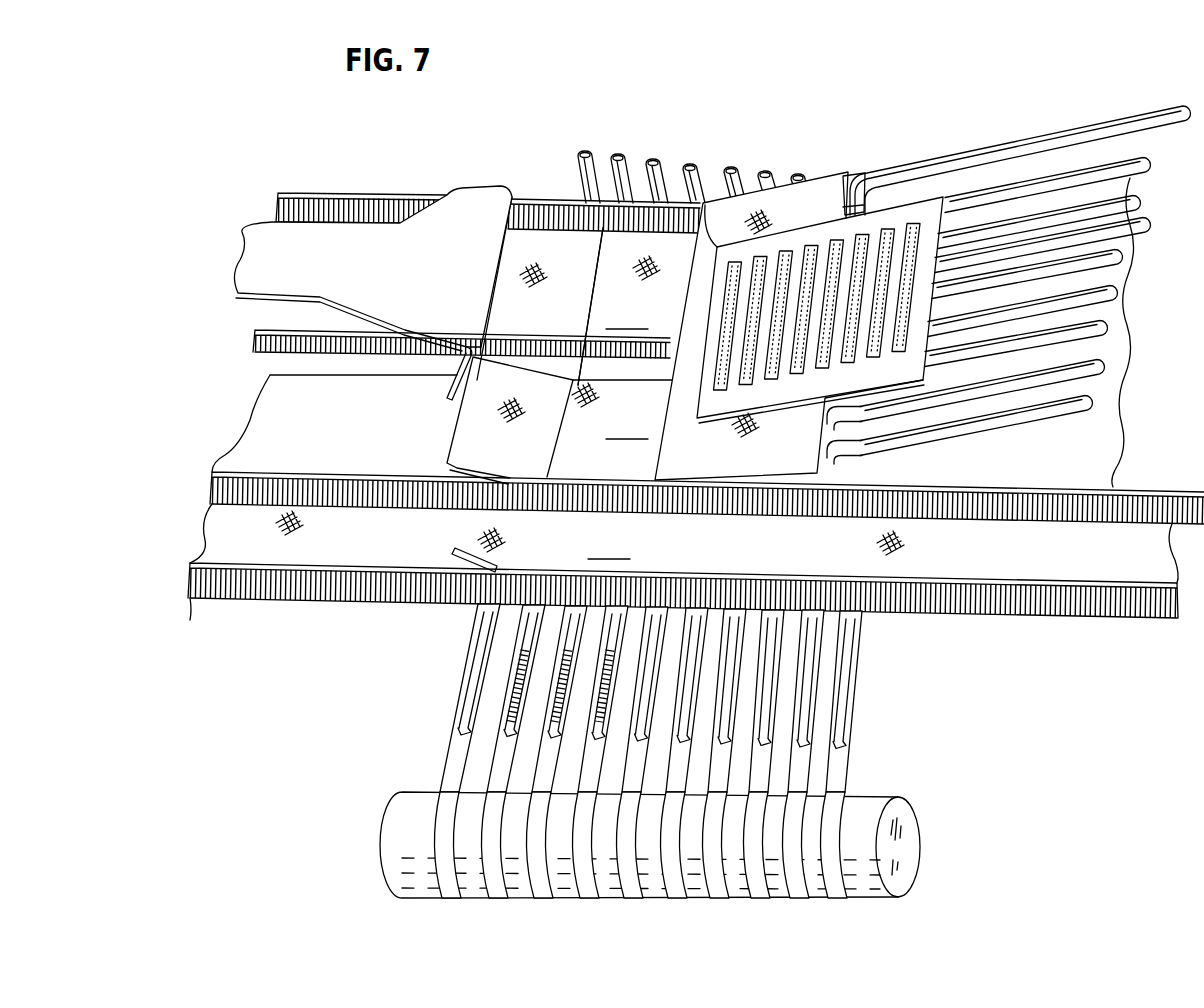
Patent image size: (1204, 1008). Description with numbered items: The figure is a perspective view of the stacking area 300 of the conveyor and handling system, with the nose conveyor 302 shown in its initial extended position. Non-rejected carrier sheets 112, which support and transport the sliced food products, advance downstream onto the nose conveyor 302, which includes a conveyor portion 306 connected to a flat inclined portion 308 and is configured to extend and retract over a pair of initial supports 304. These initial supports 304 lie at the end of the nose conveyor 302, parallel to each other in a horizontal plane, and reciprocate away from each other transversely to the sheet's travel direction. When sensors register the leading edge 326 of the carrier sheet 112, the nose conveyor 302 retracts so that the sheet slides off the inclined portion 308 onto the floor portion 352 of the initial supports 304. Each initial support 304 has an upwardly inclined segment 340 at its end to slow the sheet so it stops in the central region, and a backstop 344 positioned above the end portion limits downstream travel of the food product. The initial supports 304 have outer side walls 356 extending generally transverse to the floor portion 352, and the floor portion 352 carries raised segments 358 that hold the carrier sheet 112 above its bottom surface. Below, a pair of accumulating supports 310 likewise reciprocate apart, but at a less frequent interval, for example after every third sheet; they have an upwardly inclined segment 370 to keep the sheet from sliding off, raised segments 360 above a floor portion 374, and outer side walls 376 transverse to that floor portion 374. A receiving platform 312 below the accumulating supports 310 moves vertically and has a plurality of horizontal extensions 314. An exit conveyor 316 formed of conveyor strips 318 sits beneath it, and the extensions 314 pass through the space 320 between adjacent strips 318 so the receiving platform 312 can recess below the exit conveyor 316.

The stacking area 300 is at (654, 84).
The backstop 344 is at (458, 228).
The upwardly inclined segment 340 is at (525, 243).
The raised segments 358 is at (637, 263).
The initial supports 304 is at (632, 247).
The leading edge 326 is at (747, 200).
The carrier sheet 112 is at (800, 237).
The flat inclined portion 308 is at (833, 187).
The nose conveyor 302 is at (884, 165).
The conveyor portion 306 is at (980, 151).
The floor portion 352 is at (622, 333).
The floor portion 374 is at (684, 543).
The outer side walls 356 is at (317, 490).
The upwardly inclined segment 370 is at (490, 540).
The outer side walls 376 is at (238, 603).
The accumulating supports 310 is at (1080, 565).
The raised segments 360 is at (905, 553).
The receiving platform 312 is at (474, 689).
The conveyor strips 318 is at (462, 752).
The space 320 is at (472, 776).
The extensions 314 is at (836, 683).
The exit conveyor 316 is at (850, 766).